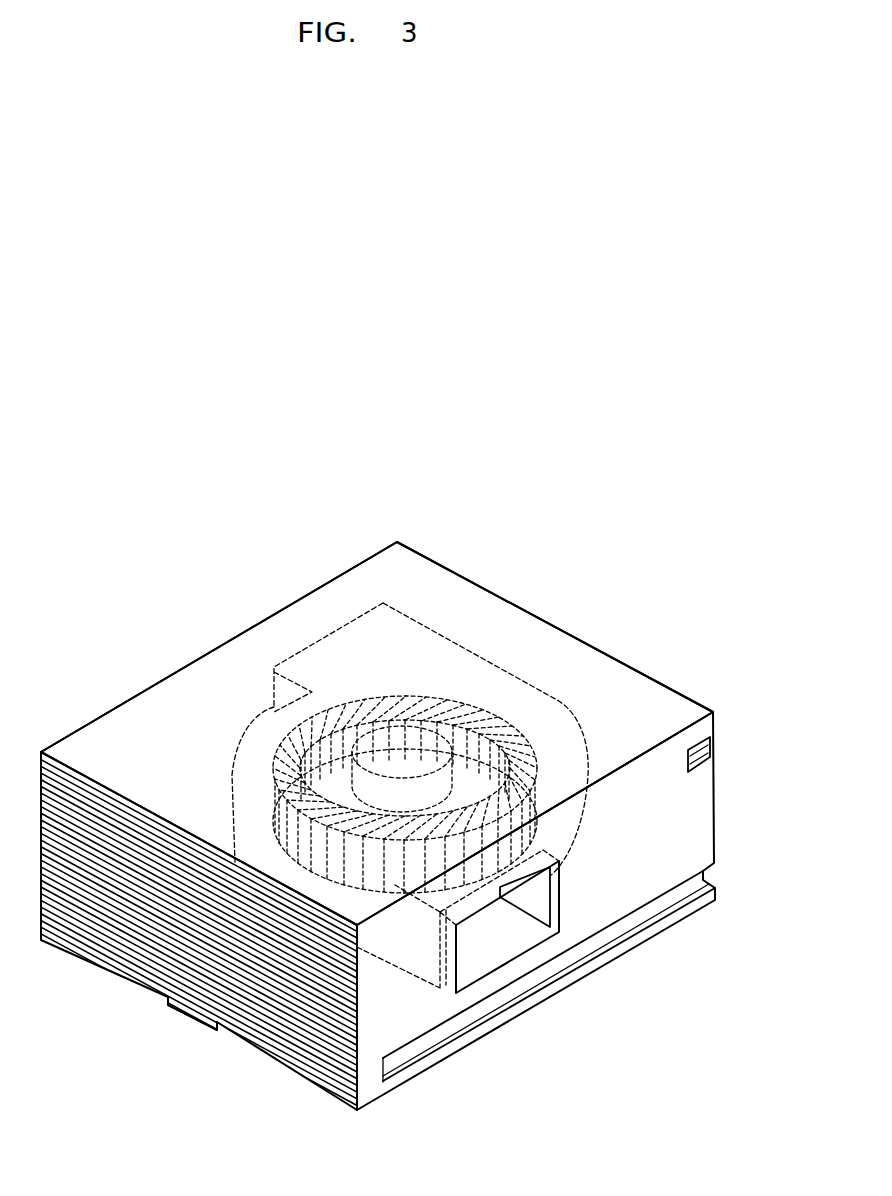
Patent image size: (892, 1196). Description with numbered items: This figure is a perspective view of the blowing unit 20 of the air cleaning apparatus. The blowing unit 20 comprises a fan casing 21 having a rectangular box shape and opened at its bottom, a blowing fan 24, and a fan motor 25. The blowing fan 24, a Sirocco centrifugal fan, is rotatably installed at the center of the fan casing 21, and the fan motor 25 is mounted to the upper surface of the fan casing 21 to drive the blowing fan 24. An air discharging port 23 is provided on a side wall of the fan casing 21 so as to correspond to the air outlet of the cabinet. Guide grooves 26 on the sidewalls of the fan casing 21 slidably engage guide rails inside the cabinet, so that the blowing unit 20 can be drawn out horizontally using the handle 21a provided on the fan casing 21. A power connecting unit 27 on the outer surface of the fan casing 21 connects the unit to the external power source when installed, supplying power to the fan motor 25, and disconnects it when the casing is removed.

The blowing unit 20 is at (585, 626).
The fan casing 21 is at (445, 588).
The handle 21a is at (195, 1010).
The air discharging port 23 is at (330, 642).
The blowing fan 24 is at (287, 758).
The fan motor 25 is at (427, 753).
The guide grooves 26 is at (445, 1033).
The power connecting unit 27 is at (706, 757).